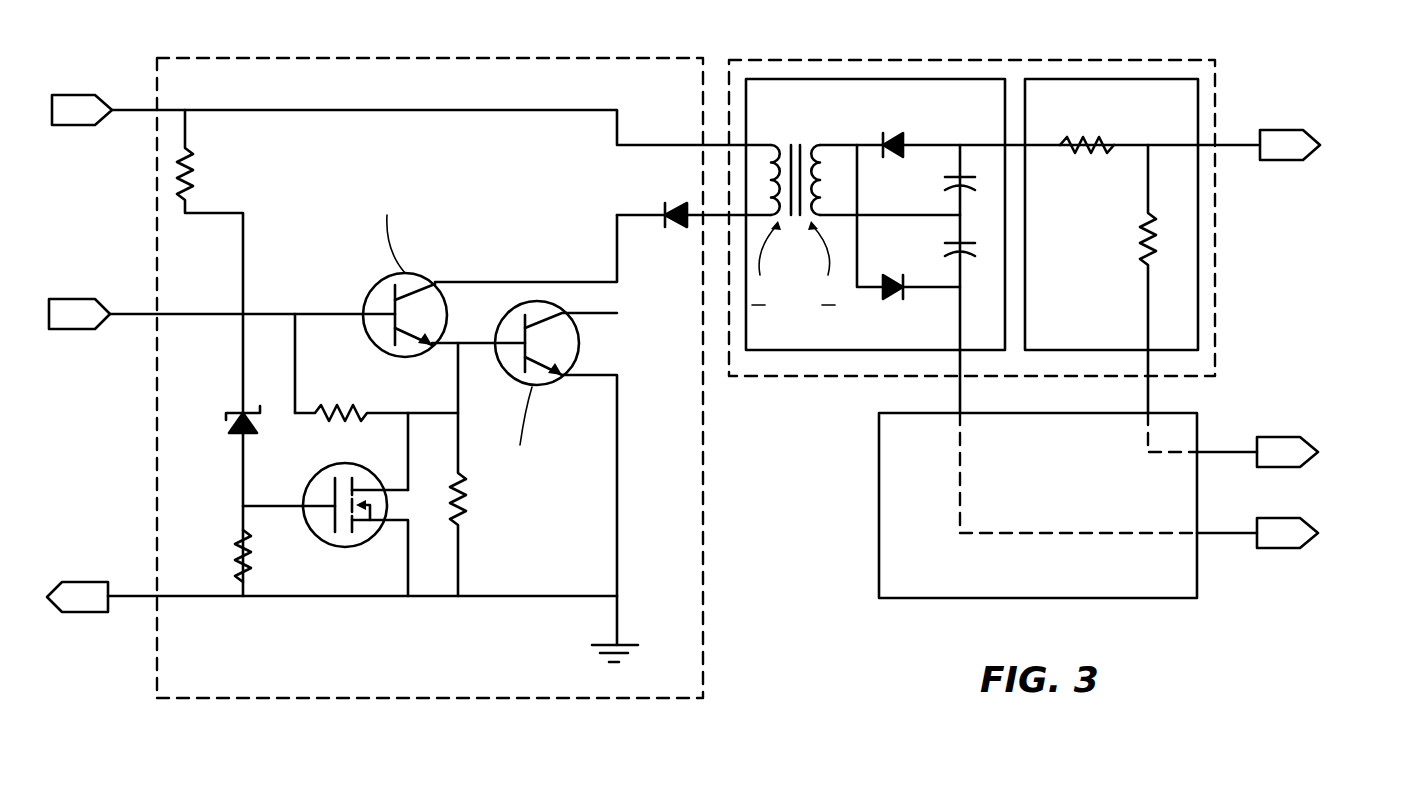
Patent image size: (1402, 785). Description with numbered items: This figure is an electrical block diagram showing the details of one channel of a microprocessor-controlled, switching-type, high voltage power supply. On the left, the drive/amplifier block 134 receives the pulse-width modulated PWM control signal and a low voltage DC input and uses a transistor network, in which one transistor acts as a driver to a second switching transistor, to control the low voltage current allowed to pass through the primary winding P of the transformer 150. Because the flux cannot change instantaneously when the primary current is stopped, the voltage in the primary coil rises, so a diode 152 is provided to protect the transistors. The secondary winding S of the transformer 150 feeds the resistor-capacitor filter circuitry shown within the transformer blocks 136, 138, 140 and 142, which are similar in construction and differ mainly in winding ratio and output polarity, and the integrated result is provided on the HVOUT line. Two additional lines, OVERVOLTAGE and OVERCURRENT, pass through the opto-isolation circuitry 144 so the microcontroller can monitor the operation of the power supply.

The drive/amplifier block 134 is at (435, 58).
The developer bias transformer block 136 is at (975, 60).
The pre-clean transformer block 138 is at (875, 214).
The transfer transformer block 140 is at (960, 279).
The charge transformer block 142 is at (1111, 246).
The opto-isolation circuitry 144 is at (878, 506).
The transformer 150 is at (798, 128).
The diode 152 is at (228, 425).